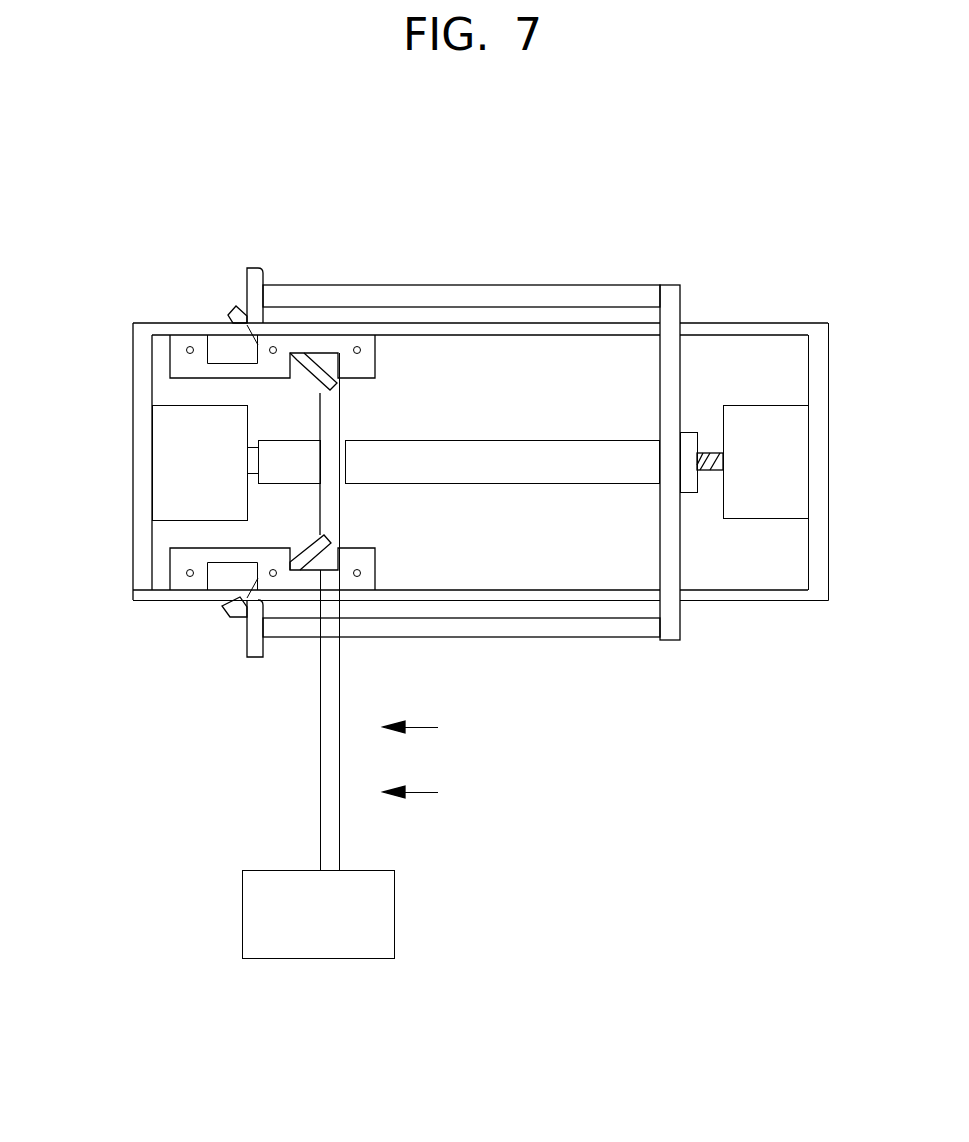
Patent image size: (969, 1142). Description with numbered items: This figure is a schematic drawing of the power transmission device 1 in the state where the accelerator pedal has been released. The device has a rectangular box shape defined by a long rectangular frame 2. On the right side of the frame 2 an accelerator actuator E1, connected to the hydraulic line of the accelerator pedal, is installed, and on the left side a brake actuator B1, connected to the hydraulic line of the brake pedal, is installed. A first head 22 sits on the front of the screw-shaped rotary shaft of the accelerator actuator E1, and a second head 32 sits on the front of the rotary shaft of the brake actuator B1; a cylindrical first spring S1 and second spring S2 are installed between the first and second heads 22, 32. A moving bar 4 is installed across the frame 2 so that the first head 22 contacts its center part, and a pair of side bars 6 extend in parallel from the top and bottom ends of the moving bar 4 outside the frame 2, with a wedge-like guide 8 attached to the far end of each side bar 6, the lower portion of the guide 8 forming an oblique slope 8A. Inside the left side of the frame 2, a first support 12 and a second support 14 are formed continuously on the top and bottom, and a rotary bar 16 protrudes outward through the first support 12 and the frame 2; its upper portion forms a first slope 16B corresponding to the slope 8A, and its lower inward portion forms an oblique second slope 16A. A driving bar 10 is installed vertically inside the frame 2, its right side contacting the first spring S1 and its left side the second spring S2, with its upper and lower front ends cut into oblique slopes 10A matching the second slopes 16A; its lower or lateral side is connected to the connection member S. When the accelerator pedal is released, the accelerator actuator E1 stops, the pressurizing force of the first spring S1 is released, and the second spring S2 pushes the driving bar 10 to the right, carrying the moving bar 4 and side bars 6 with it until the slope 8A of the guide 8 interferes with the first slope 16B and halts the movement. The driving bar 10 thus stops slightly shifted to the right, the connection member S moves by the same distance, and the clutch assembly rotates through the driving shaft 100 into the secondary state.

The power transmission device 1 is at (817, 202).
The frame 2 is at (828, 342).
The moving bar 4 is at (673, 377).
The side bar 6 is at (574, 294).
The guide 8 is at (213, 424).
The oblique slope 8A is at (258, 322).
The driving bar 10 is at (459, 611).
The oblique slope 10A is at (328, 392).
The first support 12 is at (172, 363).
The second support 14 is at (377, 353).
The rotary bar 16 is at (387, 298).
The second slope 16A is at (323, 383).
The first slope 16B is at (247, 321).
The first head 22 is at (687, 483).
The second head 32 is at (252, 463).
The driving shaft 100 is at (319, 915).
The connection member S is at (335, 682).
The first spring S1 is at (535, 462).
The second spring S2 is at (290, 462).
The brake actuator B1 is at (200, 463).
The accelerator actuator E1 is at (766, 462).